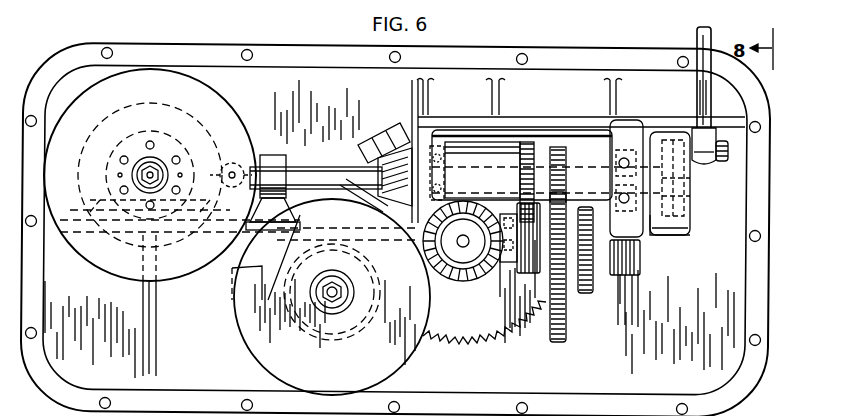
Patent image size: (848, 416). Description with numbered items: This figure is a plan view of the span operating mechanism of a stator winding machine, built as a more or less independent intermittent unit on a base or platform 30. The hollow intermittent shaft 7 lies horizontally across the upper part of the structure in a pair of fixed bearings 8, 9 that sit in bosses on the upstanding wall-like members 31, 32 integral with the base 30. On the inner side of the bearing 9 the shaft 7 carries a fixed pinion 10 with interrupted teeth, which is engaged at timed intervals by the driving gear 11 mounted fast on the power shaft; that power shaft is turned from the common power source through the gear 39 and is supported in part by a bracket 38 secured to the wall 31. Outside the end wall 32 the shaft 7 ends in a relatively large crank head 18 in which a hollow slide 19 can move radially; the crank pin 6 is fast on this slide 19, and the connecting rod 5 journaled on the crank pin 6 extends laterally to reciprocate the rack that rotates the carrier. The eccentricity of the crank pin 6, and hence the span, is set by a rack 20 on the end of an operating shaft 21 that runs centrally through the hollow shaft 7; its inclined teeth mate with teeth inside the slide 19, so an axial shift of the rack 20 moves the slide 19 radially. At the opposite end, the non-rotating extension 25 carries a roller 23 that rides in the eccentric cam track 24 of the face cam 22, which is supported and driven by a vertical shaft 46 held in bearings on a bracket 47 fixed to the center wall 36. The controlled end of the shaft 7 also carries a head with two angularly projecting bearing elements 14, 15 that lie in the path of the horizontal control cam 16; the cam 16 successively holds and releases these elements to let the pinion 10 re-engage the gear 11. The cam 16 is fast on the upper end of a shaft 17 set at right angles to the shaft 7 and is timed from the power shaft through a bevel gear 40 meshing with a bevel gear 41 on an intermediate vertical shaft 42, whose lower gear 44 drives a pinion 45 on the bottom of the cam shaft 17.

The base or platform 30 is at (295, 52).
The cam 22 is at (246, 79).
The cam track 24 is at (236, 112).
The roller 23 is at (246, 131).
The shaft 46 is at (148, 172).
The bracket 47 is at (86, 199).
The extension 25 is at (304, 172).
The bearing element 15 is at (372, 190).
The bearing element 14 is at (386, 128).
The bearing 8 is at (438, 140).
The operating shaft (rack shaft) 21 is at (462, 138).
The hollow shaft (intermittent shaft) 7 is at (505, 138).
The bracket 38 is at (540, 136).
The upstanding wall-like member 31 is at (578, 125).
The pinion 10 is at (560, 150).
The driving gear 11 is at (567, 330).
The gear 39 is at (590, 295).
The bearing 9 is at (628, 150).
The upstanding wall-like member (end wall) 32 is at (641, 262).
The hollow slide 19 is at (690, 205).
The rack 20 is at (688, 181).
The head (crank head) 18 is at (684, 236).
The connecting rod 5 is at (712, 100).
The crank pin 6 is at (726, 158).
The intermediate vertically disposed shaft 42 is at (436, 250).
The bevel gear 41 is at (460, 248).
The gear 44 is at (500, 340).
The bevel gear 40 is at (522, 268).
The upstanding center wall 36 is at (506, 268).
The rotary cam (control cam) 16 is at (410, 360).
The pinion 45 is at (335, 315).
The shaft (control cam shaft) 17 is at (329, 300).